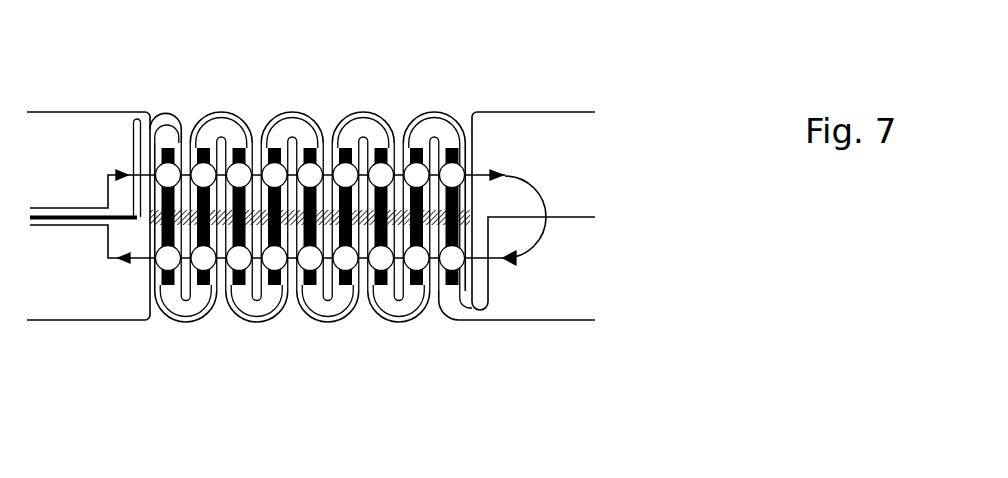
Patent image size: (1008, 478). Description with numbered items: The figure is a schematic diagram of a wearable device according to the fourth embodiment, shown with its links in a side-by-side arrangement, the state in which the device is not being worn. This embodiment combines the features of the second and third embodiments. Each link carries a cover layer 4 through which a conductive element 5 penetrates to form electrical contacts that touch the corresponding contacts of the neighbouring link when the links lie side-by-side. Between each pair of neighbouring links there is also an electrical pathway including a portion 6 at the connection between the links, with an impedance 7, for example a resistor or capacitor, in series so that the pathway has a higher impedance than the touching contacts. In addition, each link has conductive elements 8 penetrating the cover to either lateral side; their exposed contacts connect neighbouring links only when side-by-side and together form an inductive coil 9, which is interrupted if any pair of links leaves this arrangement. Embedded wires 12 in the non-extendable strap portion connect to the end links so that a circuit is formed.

The cover layer 4 is at (322, 320).
The conductive element 5 is at (305, 213).
The portion of the electrical pathway 6 is at (393, 298).
The impedance 7 is at (412, 285).
The conductive element 8 is at (242, 180).
The inductive coil 9 is at (137, 258).
The embedded wire 12 is at (137, 155).